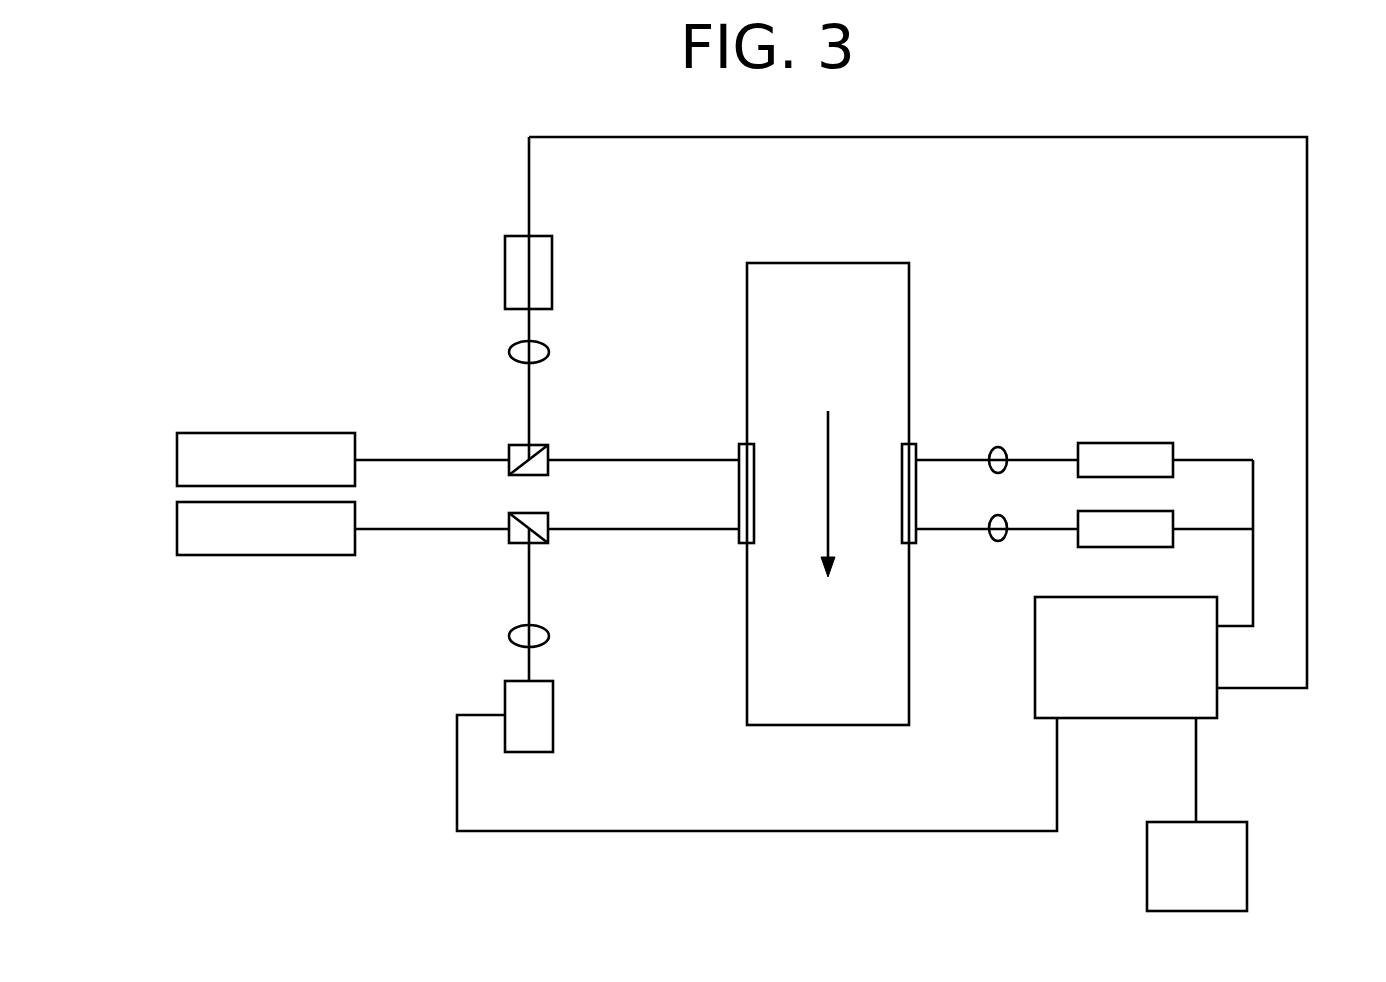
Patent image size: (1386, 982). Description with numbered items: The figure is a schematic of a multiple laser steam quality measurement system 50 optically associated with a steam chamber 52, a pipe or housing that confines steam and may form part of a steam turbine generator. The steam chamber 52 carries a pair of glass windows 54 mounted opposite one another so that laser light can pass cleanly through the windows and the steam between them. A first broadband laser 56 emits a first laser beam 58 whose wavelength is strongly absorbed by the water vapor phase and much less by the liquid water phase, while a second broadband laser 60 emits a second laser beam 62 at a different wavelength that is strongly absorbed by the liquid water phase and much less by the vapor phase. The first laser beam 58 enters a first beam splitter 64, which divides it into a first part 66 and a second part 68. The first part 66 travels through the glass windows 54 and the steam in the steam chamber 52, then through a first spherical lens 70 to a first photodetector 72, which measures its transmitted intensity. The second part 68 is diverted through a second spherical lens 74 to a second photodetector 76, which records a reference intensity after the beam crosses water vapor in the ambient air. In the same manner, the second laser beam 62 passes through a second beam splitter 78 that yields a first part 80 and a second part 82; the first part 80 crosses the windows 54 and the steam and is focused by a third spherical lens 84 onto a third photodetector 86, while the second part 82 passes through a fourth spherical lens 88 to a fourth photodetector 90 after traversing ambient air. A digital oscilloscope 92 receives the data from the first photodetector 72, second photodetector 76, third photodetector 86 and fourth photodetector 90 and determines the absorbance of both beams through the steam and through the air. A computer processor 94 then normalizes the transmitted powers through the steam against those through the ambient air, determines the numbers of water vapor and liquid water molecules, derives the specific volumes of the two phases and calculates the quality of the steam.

The multiple laser steam quality measurement system 50 is at (335, 688).
The steam chamber 52 is at (909, 305).
The glass windows 54 is at (737, 445).
The first broadband laser 56 is at (265, 433).
The first laser beam 58 is at (413, 460).
The second broadband laser 60 is at (229, 556).
The second laser beam 62 is at (402, 541).
The first beam splitter 64 is at (540, 445).
The first part of the first laser beam 66 is at (646, 457).
The second part of the first laser beam 68 is at (529, 404).
The first spherical lens 70 is at (1002, 447).
The first photodetector 72 is at (1128, 443).
The second spherical lens 74 is at (549, 352).
The second photodetector 76 is at (505, 252).
The second beam splitter 78 is at (540, 543).
The first part of the second laser beam 80 is at (672, 533).
The second part of the second laser beam 82 is at (529, 578).
The third spherical lens 84 is at (998, 545).
The third photodetector 86 is at (1120, 547).
The fourth spherical lens 88 is at (545, 625).
The fourth photodetector 90 is at (553, 710).
The digital oscilloscope 92 is at (1035, 660).
The computer processor 94 is at (1247, 856).